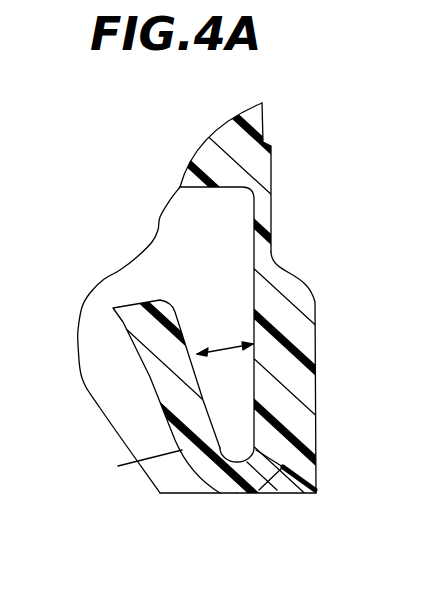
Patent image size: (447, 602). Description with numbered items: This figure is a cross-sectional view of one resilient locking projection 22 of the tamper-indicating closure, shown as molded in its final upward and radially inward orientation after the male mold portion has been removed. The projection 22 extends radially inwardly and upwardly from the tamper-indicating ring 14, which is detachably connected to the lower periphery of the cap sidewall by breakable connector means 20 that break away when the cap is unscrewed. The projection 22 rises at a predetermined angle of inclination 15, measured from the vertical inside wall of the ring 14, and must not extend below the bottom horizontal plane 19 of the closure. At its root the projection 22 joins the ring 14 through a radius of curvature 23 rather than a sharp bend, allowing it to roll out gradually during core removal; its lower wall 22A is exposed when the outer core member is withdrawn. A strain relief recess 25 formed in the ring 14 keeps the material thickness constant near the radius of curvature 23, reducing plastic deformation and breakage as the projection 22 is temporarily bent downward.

The tamper-indicating ring 14 is at (303, 345).
The angle of inclination 15 is at (222, 348).
The bottom horizontal plane 19 is at (188, 494).
The breakable connector means 20 is at (262, 216).
The projection 22 is at (157, 367).
The lower wall of the projection 22A is at (120, 468).
The radius of curvature 23 is at (237, 495).
The strain relief recess 25 is at (287, 495).